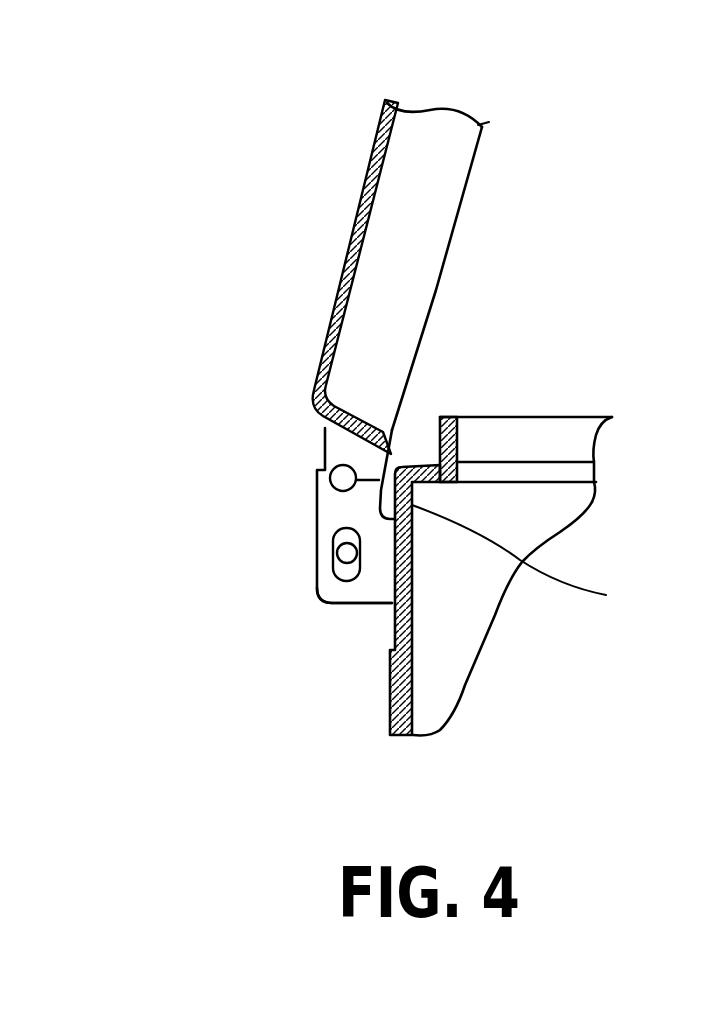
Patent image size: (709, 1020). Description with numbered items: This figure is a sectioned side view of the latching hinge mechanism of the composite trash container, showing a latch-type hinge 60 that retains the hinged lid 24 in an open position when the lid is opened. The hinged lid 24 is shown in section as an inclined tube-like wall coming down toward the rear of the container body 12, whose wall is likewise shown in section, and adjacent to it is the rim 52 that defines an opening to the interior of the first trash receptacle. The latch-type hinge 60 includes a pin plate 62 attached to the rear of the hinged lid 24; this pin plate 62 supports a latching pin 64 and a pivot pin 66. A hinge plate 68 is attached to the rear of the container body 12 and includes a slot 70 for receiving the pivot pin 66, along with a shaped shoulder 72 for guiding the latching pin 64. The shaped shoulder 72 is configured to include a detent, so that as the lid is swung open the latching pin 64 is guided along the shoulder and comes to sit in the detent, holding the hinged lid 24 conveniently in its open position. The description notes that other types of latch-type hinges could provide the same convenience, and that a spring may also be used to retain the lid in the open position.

The container body 12 is at (390, 668).
The hinged lid 24 is at (377, 155).
The rim 52 is at (470, 417).
The latch-type hinge 60 is at (207, 437).
The pin plate 62 is at (338, 448).
The latching pin 64 is at (343, 478).
The pivot pin 66 is at (345, 553).
The hinge plate 68 is at (330, 605).
The slot 70 is at (340, 533).
The shaped shoulder 72 is at (536, 565).